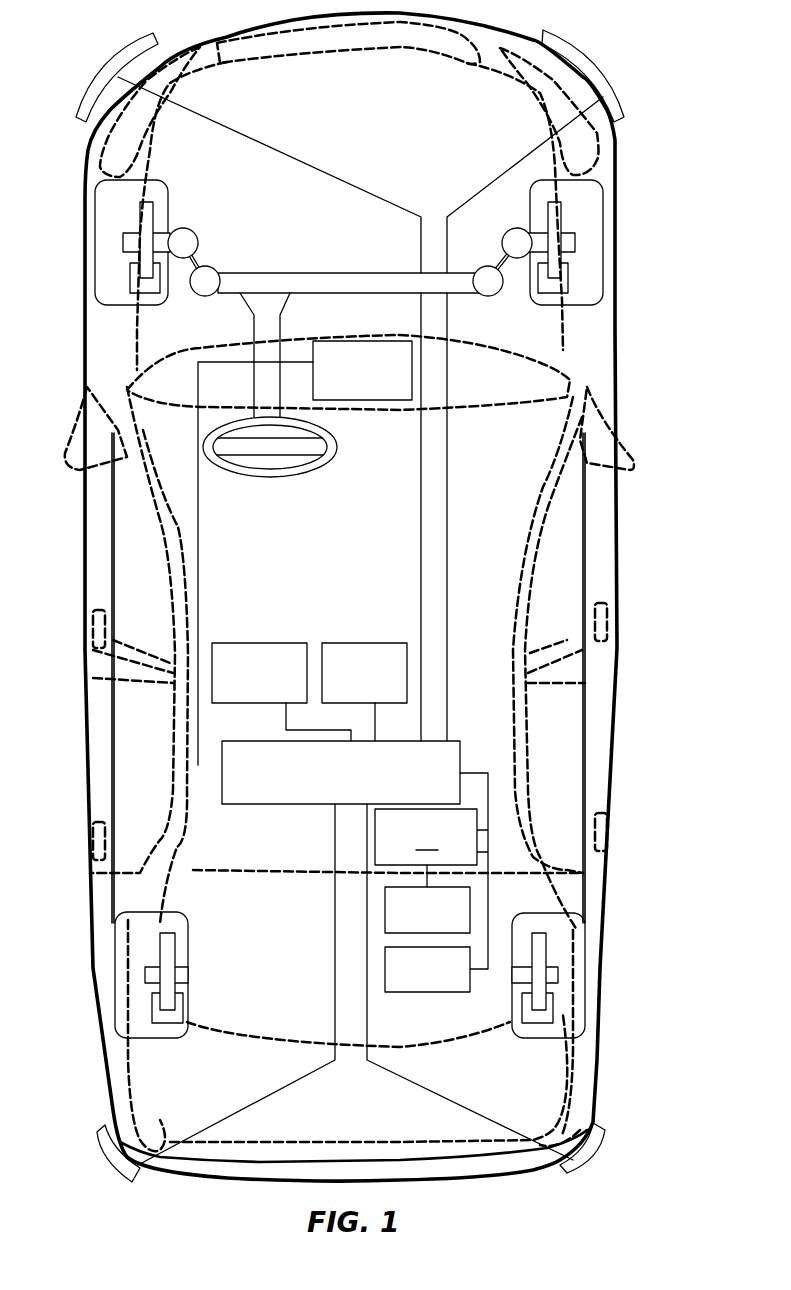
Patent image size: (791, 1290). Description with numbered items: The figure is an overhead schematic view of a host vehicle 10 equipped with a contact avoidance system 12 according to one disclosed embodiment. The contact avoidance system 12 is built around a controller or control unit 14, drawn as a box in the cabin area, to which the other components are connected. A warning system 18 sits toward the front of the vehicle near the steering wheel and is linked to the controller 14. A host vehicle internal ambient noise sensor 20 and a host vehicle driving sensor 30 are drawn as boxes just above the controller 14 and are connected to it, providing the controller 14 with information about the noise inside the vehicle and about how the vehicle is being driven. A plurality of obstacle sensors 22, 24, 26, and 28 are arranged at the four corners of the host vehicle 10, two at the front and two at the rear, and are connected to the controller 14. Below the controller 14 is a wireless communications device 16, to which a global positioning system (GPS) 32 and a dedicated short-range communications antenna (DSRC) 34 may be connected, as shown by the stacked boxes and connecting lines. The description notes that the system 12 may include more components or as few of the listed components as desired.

The host vehicle 10 is at (349, 597).
The contact avoidance system 12 is at (463, 481).
The controller 14 is at (262, 740).
The wireless communications device 16 is at (375, 837).
The warning system 18 is at (385, 400).
The host vehicle internal ambient noise sensor 20 is at (260, 643).
The obstacle sensor 22 is at (582, 50).
The obstacle sensor 24 is at (118, 50).
The obstacle sensor 26 is at (597, 1148).
The obstacle sensor 28 is at (102, 1152).
The host vehicle driving sensor 30 is at (363, 643).
The global positioning system 32 is at (385, 970).
The dedicated short-range communications antenna 34 is at (385, 907).